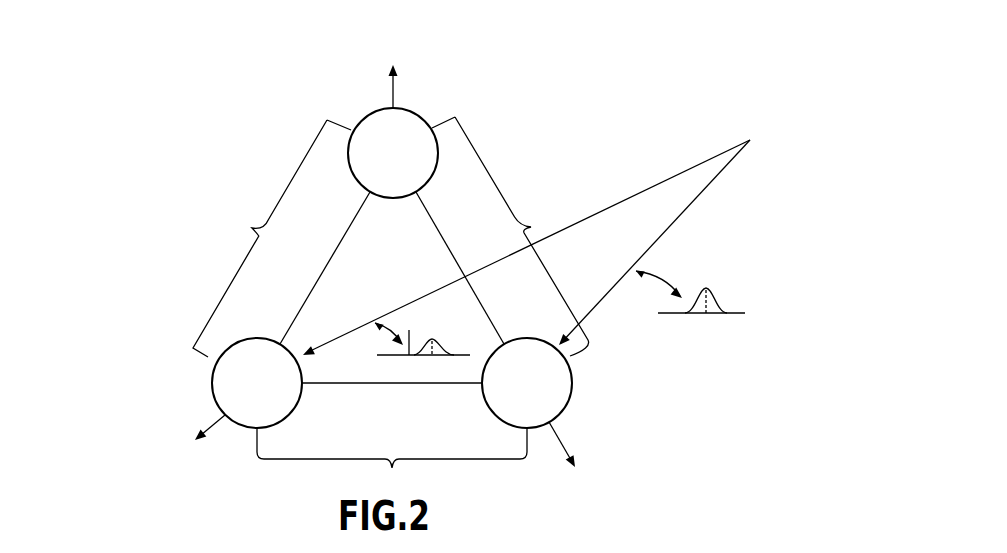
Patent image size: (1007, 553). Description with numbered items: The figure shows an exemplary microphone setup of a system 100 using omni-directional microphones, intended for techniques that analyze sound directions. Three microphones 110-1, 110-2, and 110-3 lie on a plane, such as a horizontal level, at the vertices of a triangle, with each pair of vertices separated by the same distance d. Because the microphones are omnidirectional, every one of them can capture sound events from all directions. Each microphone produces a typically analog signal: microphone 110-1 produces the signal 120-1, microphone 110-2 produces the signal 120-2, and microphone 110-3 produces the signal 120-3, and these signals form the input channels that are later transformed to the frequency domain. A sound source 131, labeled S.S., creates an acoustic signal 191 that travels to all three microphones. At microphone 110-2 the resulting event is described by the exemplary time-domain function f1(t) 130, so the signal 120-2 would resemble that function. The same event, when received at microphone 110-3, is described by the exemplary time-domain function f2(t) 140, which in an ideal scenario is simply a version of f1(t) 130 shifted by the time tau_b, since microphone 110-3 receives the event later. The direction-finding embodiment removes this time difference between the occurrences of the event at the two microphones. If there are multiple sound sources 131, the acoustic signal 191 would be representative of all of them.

The system 100 is at (733, 44).
The acoustic signal 191 is at (590, 116).
The sound source 131 is at (774, 152).
The microphone 110-1 is at (410, 126).
The microphone 110-2 is at (562, 383).
The microphone 110-3 is at (222, 391).
The signal 120-1 is at (425, 52).
The signal 120-2 is at (612, 478).
The signal 120-3 is at (140, 452).
The time-domain function f1(t) 130 is at (750, 290).
The time-domain function f2(t) 140 is at (419, 386).